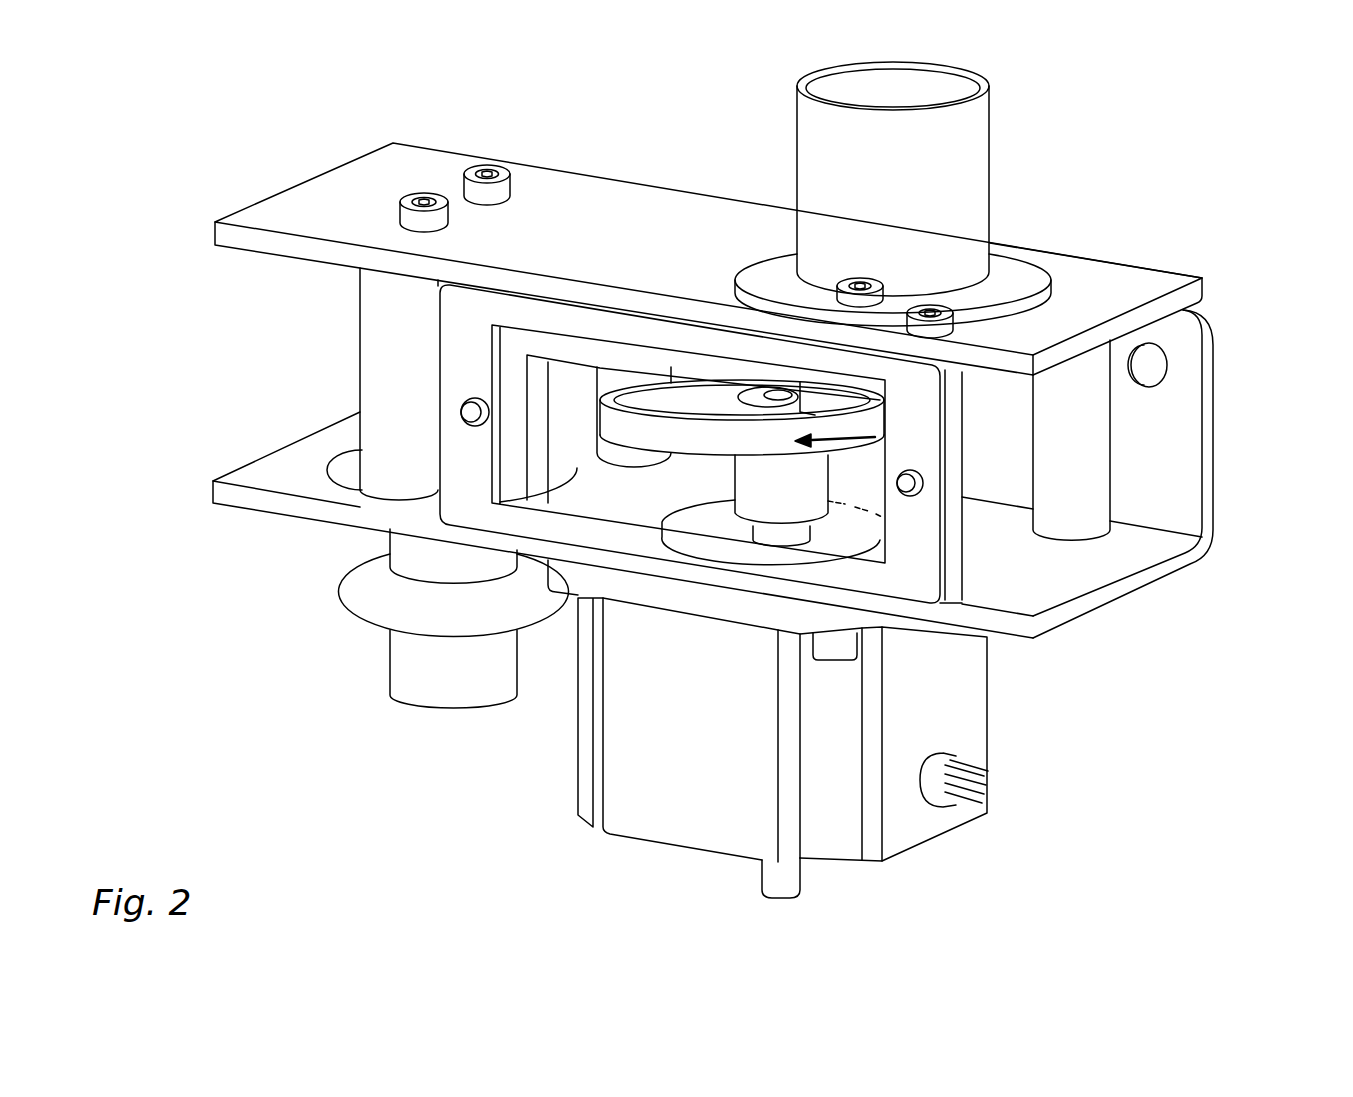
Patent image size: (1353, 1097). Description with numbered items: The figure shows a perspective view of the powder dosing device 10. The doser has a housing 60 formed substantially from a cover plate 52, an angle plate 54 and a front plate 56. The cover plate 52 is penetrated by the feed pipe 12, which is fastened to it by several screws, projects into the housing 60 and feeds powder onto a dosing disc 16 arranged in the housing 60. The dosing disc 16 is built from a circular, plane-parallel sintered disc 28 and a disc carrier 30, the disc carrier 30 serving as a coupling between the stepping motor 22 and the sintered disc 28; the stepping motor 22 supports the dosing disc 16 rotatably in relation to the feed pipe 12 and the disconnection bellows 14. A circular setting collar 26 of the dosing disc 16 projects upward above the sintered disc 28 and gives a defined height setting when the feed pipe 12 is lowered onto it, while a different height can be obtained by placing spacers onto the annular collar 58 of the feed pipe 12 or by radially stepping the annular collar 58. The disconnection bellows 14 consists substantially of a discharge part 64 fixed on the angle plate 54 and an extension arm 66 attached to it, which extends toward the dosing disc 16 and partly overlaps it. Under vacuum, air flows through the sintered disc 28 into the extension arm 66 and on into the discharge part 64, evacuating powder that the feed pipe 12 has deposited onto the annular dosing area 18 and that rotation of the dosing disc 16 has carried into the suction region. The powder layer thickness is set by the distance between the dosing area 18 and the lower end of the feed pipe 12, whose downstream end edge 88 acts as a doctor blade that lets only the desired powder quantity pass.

The drive device 10 is at (1207, 703).
The feed pipe 12 is at (963, 172).
The disconnection bellows 14 is at (684, 366).
The dosing disc 16 is at (688, 436).
The annular dosing area 18 is at (673, 388).
The stepping motor 22 is at (688, 818).
The setting collar 26 is at (757, 390).
The sintered disc 28 is at (714, 406).
The disc carrier 30 is at (633, 416).
The cover plate 52 is at (270, 210).
The angle plate 54 is at (1182, 452).
The front plate 56 is at (928, 556).
The annular collar 58 is at (1017, 273).
The housing 60 is at (1221, 286).
The discharge part 64 is at (380, 353).
The extension arm 66 is at (562, 352).
The end edge 88 is at (812, 412).